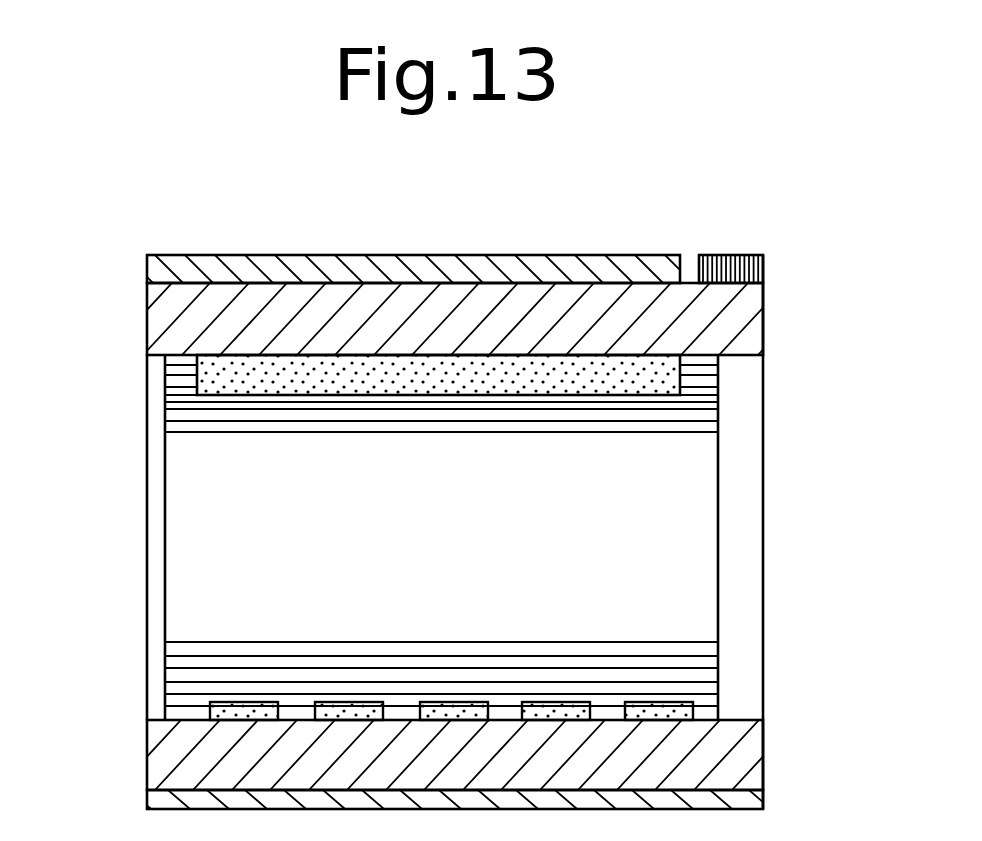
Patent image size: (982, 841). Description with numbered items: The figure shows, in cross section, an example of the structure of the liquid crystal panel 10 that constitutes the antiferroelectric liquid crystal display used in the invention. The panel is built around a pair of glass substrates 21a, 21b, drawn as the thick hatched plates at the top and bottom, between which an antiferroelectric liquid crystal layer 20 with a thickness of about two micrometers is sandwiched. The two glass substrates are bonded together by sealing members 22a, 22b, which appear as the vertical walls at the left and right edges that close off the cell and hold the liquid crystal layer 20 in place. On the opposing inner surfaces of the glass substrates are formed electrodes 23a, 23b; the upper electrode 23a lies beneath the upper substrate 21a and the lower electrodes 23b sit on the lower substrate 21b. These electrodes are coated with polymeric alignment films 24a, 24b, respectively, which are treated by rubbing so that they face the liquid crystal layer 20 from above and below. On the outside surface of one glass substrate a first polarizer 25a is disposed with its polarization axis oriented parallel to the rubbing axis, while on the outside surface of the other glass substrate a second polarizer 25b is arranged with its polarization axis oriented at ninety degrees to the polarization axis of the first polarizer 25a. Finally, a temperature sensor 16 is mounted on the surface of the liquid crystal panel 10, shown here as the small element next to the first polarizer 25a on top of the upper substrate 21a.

The liquid crystal panel 10 is at (580, 254).
The temperature sensor 16 is at (733, 253).
The antiferroelectric liquid crystal layer 20 is at (452, 533).
The glass substrate 21a is at (752, 335).
The glass substrate 21b is at (158, 771).
The sealing member 22a is at (156, 496).
The sealing member 22b is at (750, 507).
The electrode 23a is at (203, 397).
The electrode 23b is at (212, 708).
The polymeric alignment film 24a is at (700, 387).
The polymeric alignment film 24b is at (703, 672).
The first polarizer 25a is at (147, 272).
The second polarizer 25b is at (753, 793).